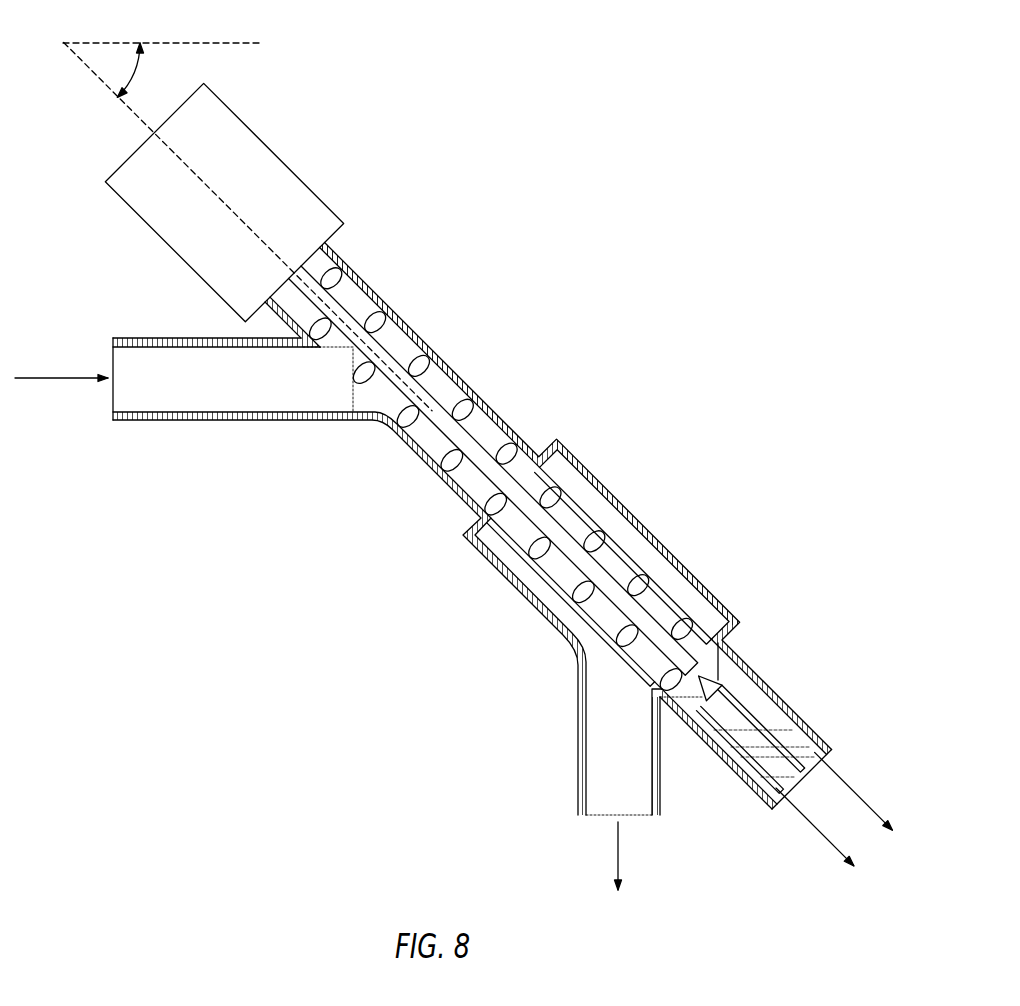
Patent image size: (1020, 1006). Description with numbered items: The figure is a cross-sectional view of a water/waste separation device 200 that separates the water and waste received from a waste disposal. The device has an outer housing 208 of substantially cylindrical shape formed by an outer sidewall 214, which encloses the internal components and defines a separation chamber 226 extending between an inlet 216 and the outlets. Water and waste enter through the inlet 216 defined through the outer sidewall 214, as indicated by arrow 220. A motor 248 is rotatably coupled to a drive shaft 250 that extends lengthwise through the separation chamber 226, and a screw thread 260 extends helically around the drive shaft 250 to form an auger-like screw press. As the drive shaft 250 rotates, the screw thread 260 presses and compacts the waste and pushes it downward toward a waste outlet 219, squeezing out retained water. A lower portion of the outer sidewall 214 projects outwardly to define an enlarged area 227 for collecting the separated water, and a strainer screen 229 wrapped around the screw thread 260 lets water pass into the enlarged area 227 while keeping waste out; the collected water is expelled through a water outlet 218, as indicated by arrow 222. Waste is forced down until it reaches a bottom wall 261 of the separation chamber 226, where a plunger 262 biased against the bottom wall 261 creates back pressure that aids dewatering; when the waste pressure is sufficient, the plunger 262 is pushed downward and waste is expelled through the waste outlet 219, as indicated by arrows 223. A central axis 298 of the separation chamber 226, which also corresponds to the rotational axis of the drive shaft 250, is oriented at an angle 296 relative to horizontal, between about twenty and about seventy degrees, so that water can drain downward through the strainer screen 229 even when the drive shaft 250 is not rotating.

The water/waste separation device 200 is at (650, 216).
The outer housing 208 is at (477, 387).
The outer sidewall 214 is at (423, 465).
The inlet 216 is at (135, 358).
The water outlet 218 is at (600, 810).
The waste outlet 219 is at (815, 747).
The arrow 220 is at (42, 379).
The arrow 222 is at (612, 872).
The arrows 223 is at (855, 797).
The separation chamber 226 is at (393, 340).
The enlarged area 227 is at (547, 595).
The strainer screen 229 is at (618, 543).
The motor 248 is at (274, 170).
The drive shaft 250 is at (490, 498).
The screw thread 260 is at (555, 483).
The bottom wall 261 is at (727, 655).
The plunger 262 is at (740, 690).
The angle 296 is at (142, 74).
The central axis 298 is at (197, 177).